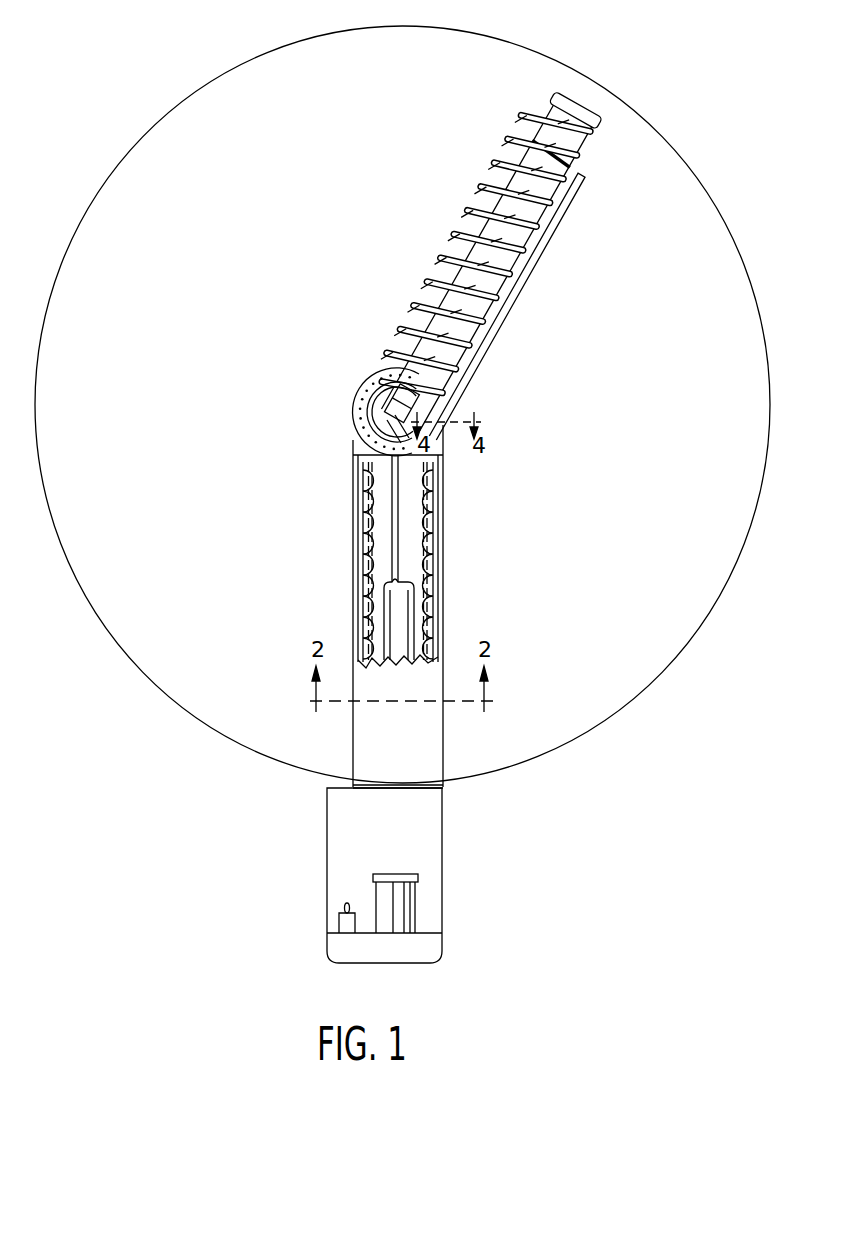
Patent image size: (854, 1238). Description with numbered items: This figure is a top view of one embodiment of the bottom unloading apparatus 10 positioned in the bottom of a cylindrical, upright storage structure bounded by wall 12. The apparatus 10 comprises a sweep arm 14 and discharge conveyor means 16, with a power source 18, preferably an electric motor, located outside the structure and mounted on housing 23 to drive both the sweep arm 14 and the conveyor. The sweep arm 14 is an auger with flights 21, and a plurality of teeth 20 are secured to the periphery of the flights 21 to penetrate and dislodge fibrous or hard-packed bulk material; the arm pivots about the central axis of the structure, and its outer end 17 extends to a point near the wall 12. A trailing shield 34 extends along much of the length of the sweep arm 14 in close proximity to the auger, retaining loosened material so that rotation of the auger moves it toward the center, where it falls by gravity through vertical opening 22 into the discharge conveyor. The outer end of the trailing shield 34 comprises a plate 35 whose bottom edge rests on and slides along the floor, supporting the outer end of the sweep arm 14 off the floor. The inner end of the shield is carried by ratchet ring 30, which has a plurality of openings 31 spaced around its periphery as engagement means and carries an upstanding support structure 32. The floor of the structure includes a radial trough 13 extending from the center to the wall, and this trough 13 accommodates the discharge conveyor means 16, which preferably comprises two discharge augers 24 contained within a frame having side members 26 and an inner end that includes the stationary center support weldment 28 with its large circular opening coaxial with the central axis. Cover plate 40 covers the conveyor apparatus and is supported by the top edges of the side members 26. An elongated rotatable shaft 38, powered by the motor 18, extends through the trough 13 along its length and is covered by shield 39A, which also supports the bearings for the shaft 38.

The bottom unloading apparatus 10 is at (352, 498).
The wall 12 is at (247, 62).
The radial trough 13 is at (355, 530).
The sweep arm 14 is at (478, 226).
The discharge conveyor means 16 is at (378, 568).
The outer end of the sweep arm 17 is at (572, 100).
The power source 18 is at (408, 895).
The teeth 20 is at (536, 112).
The flights 21 is at (507, 194).
The vertical opening 22 is at (375, 412).
The housing 23 is at (425, 843).
The discharge augers 24 is at (383, 557).
The side members 26 is at (362, 618).
The center support weldment 28 is at (355, 441).
The ratchet ring 30 is at (355, 400).
The openings 31 is at (383, 372).
The upstanding support structure 32 is at (413, 403).
The trailing shield 34 is at (558, 228).
The plate 35 is at (570, 168).
The elongated rotatable shaft 38 is at (398, 513).
The shield 39A is at (400, 607).
The cover plate 40 is at (432, 758).